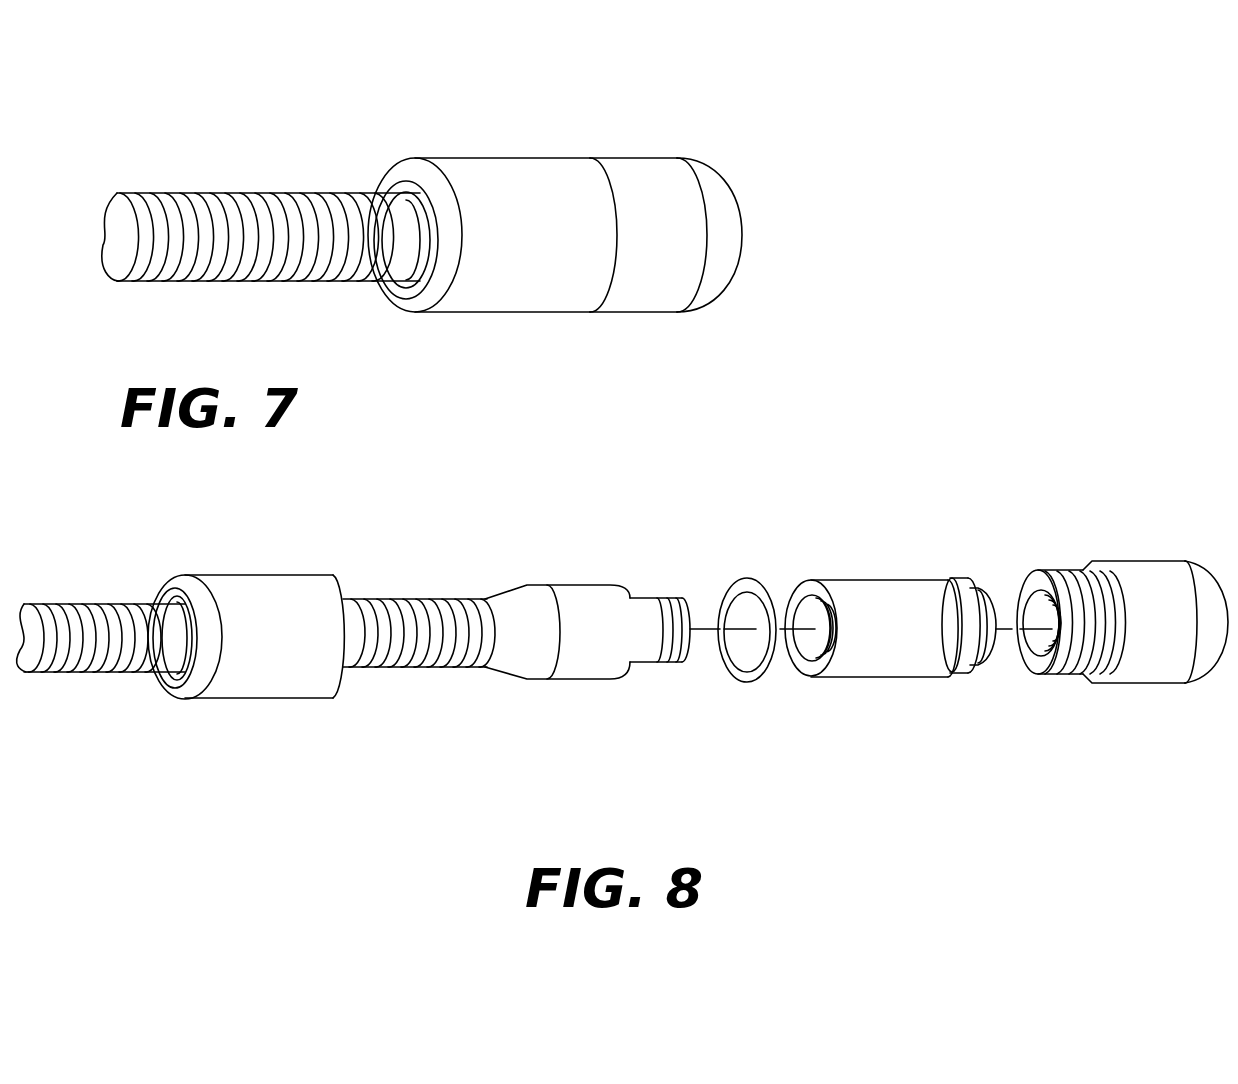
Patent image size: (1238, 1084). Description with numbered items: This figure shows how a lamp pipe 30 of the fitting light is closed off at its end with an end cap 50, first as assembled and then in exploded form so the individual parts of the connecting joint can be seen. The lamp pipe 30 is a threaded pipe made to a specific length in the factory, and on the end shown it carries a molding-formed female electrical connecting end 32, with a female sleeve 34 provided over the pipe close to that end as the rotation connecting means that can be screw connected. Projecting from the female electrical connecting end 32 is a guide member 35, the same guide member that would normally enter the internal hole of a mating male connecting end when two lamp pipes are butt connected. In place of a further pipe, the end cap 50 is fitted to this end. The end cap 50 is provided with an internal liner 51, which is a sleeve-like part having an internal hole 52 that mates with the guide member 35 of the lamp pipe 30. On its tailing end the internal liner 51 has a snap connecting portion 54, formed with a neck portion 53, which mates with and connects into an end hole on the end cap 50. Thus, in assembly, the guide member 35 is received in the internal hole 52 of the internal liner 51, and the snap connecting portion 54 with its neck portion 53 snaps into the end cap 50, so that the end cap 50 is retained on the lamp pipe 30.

In FIG. 7, the lamp pipe 30 is at (268, 237).
In FIG. 8, the lamp pipe 30 is at (87, 643).
In FIG. 8, the female electrical connecting end 32 is at (580, 665).
In FIG. 7, the female sleeve 34 is at (515, 267).
In FIG. 8, the female sleeve 34 is at (285, 657).
In FIG. 8, the guide member 35 is at (656, 612).
In FIG. 7, the end cap 50 is at (652, 200).
In FIG. 8, the end cap 50 is at (1148, 653).
In FIG. 8, the internal liner 51 is at (880, 645).
In FIG. 8, the internal hole 52 is at (810, 600).
In FIG. 8, the neck portion 53 is at (958, 603).
In FIG. 8, the snap connecting portion 54 is at (980, 653).